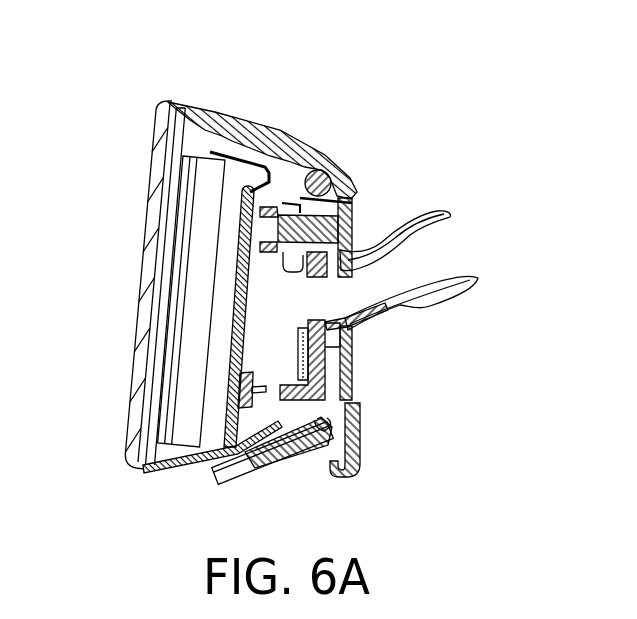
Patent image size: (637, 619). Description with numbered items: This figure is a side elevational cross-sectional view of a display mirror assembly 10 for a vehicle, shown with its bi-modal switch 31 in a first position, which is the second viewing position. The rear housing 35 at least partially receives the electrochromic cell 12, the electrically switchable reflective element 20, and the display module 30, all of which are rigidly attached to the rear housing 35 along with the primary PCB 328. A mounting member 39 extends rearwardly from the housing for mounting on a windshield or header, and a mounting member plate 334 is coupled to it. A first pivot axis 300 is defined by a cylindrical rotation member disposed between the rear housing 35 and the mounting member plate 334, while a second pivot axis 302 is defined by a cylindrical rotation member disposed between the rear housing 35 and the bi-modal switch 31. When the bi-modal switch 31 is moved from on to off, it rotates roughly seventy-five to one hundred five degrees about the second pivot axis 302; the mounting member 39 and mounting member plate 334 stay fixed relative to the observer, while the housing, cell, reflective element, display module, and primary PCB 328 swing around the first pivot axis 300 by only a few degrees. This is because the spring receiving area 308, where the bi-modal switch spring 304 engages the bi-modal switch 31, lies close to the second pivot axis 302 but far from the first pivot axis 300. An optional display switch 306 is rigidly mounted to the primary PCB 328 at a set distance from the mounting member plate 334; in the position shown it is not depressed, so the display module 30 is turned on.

The display mirror assembly 10 is at (401, 67).
The electrochromic cell 12 is at (178, 195).
The primary PCB 328 is at (228, 232).
The display module 30 is at (197, 283).
The electrically switchable reflective element 20 is at (178, 396).
The rear housing 35 is at (277, 138).
The first pivot axis 300 is at (317, 170).
The mounting member 39 is at (430, 212).
The mounting member plate 334 is at (350, 330).
The display switch 306 is at (263, 380).
The bi-modal switch spring 304 is at (330, 417).
The spring receiving area 308 is at (327, 450).
The second pivot axis 302 is at (302, 440).
The bi-modal switch 31 is at (258, 477).